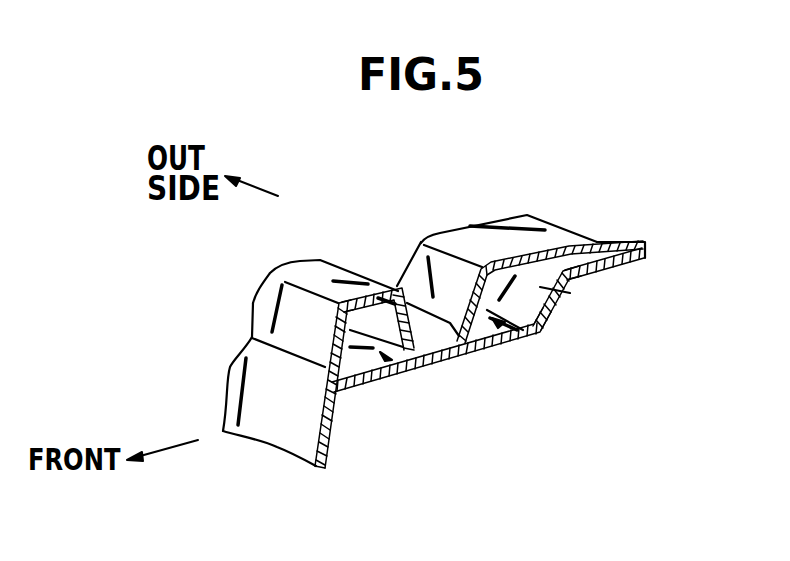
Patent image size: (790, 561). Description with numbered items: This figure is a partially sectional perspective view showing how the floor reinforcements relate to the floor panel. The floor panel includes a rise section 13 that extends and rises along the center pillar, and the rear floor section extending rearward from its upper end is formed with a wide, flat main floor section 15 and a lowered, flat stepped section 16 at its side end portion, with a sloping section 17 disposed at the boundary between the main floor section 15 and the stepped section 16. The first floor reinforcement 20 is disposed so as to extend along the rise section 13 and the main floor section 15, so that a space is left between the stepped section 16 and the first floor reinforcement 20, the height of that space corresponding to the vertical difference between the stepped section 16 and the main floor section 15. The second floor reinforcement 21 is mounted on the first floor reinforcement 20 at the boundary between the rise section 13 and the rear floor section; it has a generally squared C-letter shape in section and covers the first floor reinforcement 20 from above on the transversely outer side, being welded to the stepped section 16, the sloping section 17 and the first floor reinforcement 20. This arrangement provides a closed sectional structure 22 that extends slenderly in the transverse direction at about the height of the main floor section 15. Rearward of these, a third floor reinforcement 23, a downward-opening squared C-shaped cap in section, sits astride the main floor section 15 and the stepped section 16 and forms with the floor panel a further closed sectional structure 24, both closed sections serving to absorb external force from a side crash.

The rise section 13 is at (342, 440).
The main floor section 15 is at (593, 265).
The stepped section 16 is at (375, 380).
The sloping section 17 is at (558, 295).
The first floor reinforcement 20 is at (255, 383).
The second floor reinforcement 21 is at (318, 278).
The closed sectional structure 22 is at (403, 372).
The third floor reinforcement 23 is at (497, 262).
The closed sectional structure 24 is at (507, 335).